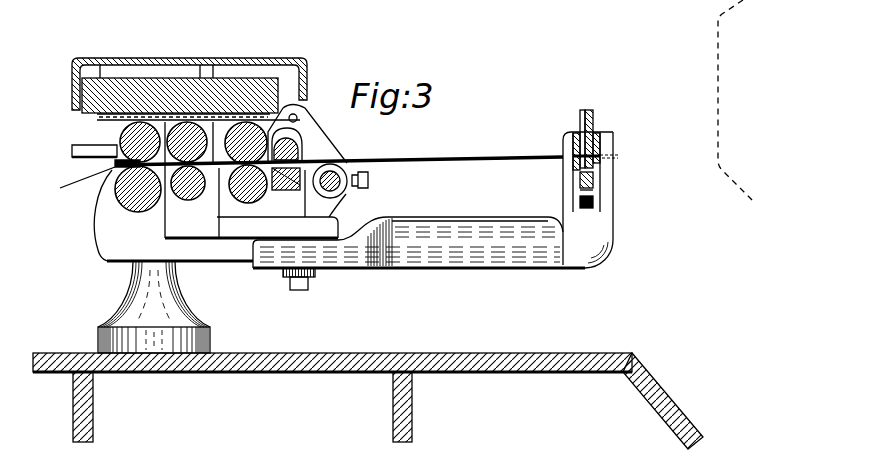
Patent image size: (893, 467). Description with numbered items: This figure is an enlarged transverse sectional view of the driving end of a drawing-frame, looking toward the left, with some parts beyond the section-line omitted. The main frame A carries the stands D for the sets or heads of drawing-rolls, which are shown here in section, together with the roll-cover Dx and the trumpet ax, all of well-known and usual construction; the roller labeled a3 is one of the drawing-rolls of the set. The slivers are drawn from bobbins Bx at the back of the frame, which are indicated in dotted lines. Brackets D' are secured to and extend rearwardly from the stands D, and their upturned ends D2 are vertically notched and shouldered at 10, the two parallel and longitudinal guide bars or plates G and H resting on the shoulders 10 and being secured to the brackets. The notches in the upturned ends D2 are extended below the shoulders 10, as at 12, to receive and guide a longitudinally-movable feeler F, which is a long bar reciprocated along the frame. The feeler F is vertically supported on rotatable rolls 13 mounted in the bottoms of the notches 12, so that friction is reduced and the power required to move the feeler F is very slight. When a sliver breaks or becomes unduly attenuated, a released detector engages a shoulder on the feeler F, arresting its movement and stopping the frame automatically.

The roll-cover Dx is at (167, 58).
The stand D is at (144, 261).
The bracket D' is at (433, 219).
The upturned end of bracket D2 is at (612, 167).
The trumpet ax is at (273, 187).
The feed roller a3 is at (233, 196).
The main frame A is at (312, 366).
The bobbin Bx is at (718, 43).
The feeler F is at (607, 188).
The guide-plate G is at (586, 148).
The front guide-plate H is at (565, 136).
The shoulder 10 is at (579, 177).
The notch 12 is at (578, 191).
The roll 13 is at (596, 250).